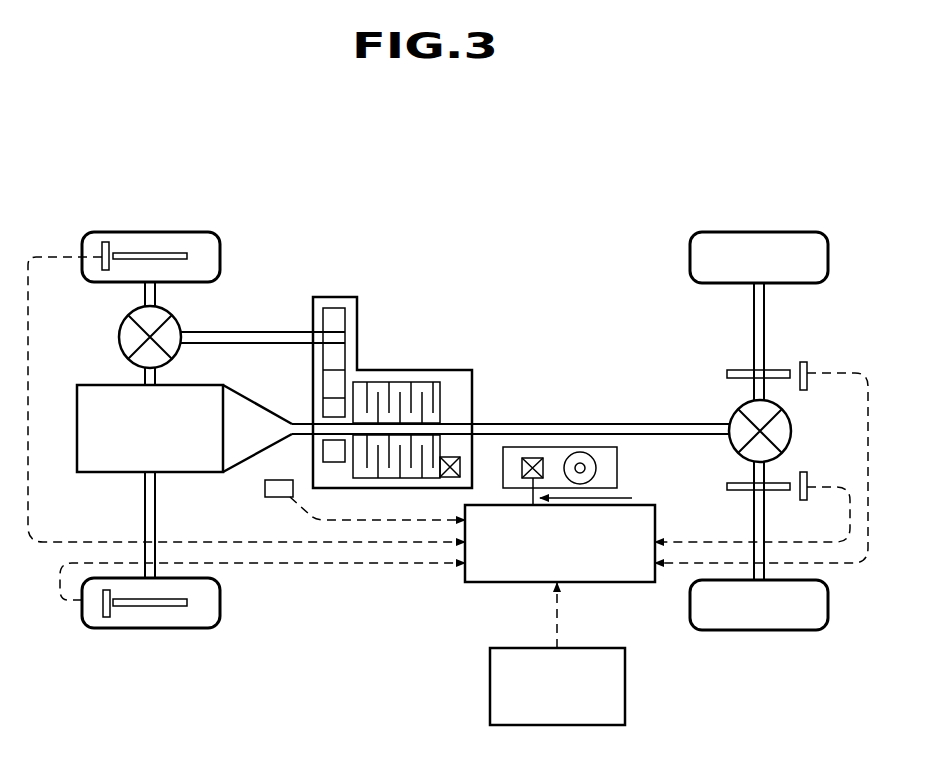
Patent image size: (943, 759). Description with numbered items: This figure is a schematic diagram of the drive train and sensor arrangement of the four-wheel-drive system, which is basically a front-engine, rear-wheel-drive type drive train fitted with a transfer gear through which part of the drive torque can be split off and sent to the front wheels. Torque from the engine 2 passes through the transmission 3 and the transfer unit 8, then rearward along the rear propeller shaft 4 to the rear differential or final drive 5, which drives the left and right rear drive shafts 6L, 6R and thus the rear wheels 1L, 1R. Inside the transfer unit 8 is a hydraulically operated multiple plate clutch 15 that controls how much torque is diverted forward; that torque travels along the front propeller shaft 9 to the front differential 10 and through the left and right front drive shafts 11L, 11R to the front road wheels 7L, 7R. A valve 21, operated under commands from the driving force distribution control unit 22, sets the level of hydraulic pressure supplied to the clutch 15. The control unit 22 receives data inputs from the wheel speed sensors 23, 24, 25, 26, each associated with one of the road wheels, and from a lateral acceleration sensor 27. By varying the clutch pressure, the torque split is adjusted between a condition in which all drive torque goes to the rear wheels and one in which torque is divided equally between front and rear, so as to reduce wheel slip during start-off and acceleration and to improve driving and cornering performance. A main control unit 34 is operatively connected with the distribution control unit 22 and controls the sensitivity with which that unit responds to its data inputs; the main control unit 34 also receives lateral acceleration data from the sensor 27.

The rear wheel 1R is at (770, 231).
The rear wheel 1L is at (765, 631).
The engine 2 is at (95, 382).
The transmission 3 is at (256, 403).
The rear propeller shaft 4 is at (587, 423).
The rear differential 5 is at (738, 412).
The right rear drive shaft 6R is at (753, 310).
The left rear drive shaft 6L is at (764, 505).
The front road wheel 7R is at (170, 232).
The front road wheel 7L is at (188, 630).
The transfer unit 8 is at (333, 296).
The front propeller shaft 9 is at (276, 331).
The front differential 10 is at (120, 323).
The right front drive shaft 11R is at (157, 292).
The left front drive shaft 11L is at (145, 507).
The hydraulically operated multiple plate clutch 15 is at (403, 380).
The valve 21 is at (533, 457).
The driving force distribution control unit 22 is at (637, 583).
The wheel speed sensor 23 is at (104, 240).
The wheel speed sensor 24 is at (106, 630).
The wheel speed sensor 25 is at (803, 360).
The wheel speed sensor 26 is at (806, 470).
The lateral acceleration sensor 27 is at (265, 490).
The main control unit 34 is at (626, 688).